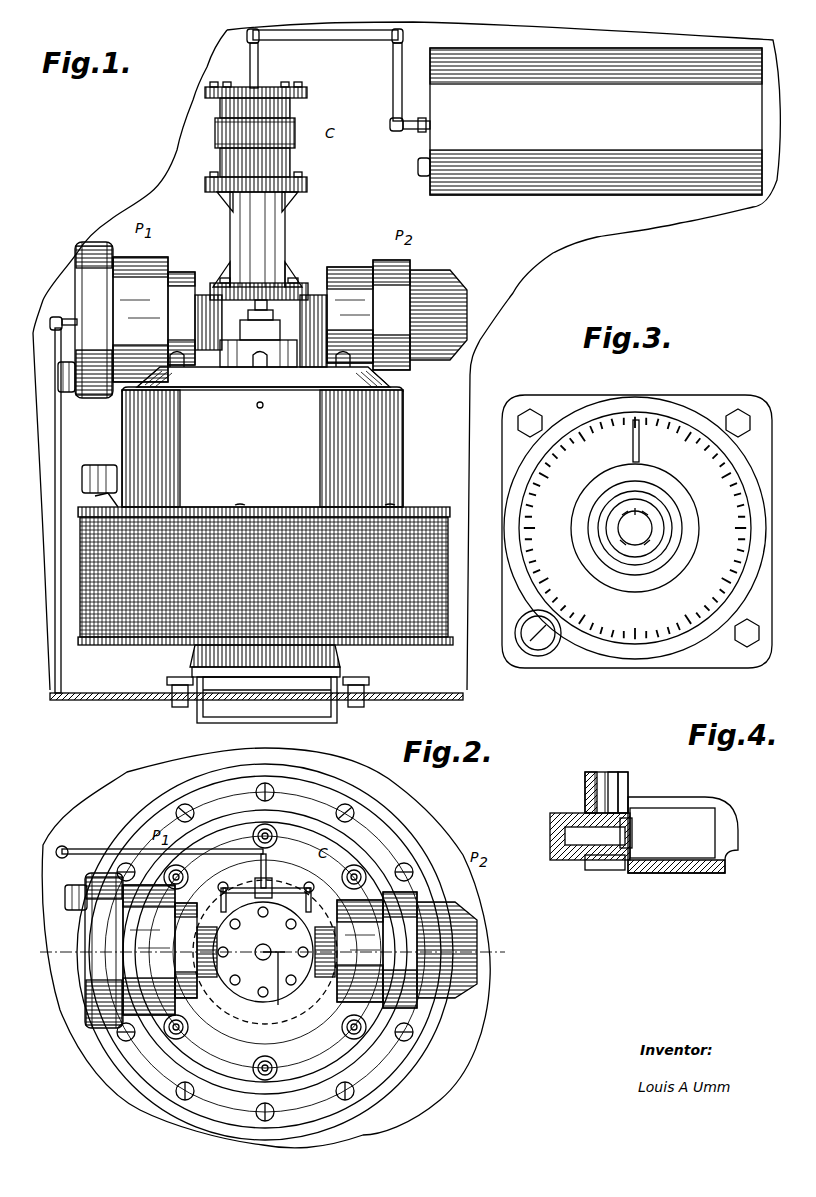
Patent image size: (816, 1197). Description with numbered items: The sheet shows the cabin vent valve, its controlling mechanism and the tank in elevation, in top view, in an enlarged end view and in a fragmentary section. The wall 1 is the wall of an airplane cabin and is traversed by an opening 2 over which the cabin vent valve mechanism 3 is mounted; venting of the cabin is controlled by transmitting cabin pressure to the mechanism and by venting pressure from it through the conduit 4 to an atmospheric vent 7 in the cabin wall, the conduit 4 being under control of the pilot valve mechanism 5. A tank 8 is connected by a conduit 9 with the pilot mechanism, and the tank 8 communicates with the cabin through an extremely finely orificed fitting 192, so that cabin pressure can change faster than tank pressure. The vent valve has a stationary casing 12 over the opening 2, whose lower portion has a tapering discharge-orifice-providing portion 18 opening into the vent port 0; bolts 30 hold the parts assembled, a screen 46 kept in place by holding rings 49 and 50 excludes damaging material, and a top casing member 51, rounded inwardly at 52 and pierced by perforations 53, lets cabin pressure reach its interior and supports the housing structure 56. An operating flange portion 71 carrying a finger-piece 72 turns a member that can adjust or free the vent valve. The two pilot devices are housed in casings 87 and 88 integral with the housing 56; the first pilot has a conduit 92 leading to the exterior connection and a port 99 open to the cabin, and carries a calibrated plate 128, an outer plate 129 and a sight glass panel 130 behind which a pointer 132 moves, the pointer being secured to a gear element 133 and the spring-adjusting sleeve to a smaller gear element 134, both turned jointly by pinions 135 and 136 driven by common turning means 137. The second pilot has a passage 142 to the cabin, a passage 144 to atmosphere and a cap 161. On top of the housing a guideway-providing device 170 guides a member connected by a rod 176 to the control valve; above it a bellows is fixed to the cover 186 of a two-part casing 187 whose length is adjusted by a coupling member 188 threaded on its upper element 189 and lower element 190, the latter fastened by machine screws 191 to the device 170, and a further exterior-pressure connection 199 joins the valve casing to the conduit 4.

In FIG. 1, the wall 1 is at (422, 690).
In FIG. 2, the wall 1 is at (70, 1027).
In FIG. 1, the opening 2 is at (185, 705).
In FIG. 1, the cabin vent valve mechanism 3 is at (412, 467).
In FIG. 2, the cabin vent valve mechanism 3 is at (379, 858).
In FIG. 1, the conduit 4 is at (60, 458).
In FIG. 3, the conduit 4 is at (578, 600).
In FIG. 2, the conduit 4 is at (100, 849).
In FIG. 1, the pilot valve mechanism 5 is at (306, 266).
In FIG. 2, the pilot valve mechanism 5 is at (46, 946).
In FIG. 1, the atmospheric vent 7 is at (60, 702).
In FIG. 1, the tank 8 is at (545, 182).
In FIG. 1, the conduit 9 is at (382, 42).
In FIG. 2, the conduit 9 is at (270, 984).
In FIG. 1, the vent port 0 is at (255, 712).
In FIG. 1, the stationary casing 12 is at (436, 508).
In FIG. 2, the stationary casing 12 is at (165, 1090).
In FIG. 1, the discharge-orifice-providing portion 18 is at (330, 682).
In FIG. 1, the bolts 30 is at (260, 506).
In FIG. 2, the bolts 30 is at (390, 1035).
In FIG. 1, the screen 46 is at (115, 620).
In FIG. 1, the holding ring 49 is at (78, 513).
In FIG. 2, the holding ring 49 is at (440, 1000).
In FIG. 1, the holding ring 50 is at (440, 645).
In FIG. 1, the top casing member 51 is at (405, 420).
In FIG. 2, the top casing member 51 is at (325, 1080).
In FIG. 1, the inwardly rounded portion 52 is at (403, 394).
In FIG. 1, the perforations 53 is at (257, 407).
In FIG. 1, the housing structure 56 is at (385, 379).
In FIG. 2, the housing structure 56 is at (158, 1065).
In FIG. 1, the operating flange portion 71 is at (94, 498).
In FIG. 1, the finger-piece 72 is at (103, 465).
In FIG. 1, the casing 87 is at (160, 275).
In FIG. 4, the casing 87 is at (728, 868).
In FIG. 2, the casing 87 is at (110, 1032).
In FIG. 1, the casing 88 is at (345, 275).
In FIG. 2, the casing 88 is at (398, 990).
In FIG. 2, the conduit 92 is at (220, 902).
In FIG. 2, the port 99 is at (215, 978).
In FIG. 3, the plate 128 is at (580, 402).
In FIG. 4, the plate 128 is at (588, 793).
In FIG. 3, the outer plate 129 is at (675, 675).
In FIG. 3, the sight glass panel 130 is at (668, 442).
In FIG. 4, the sight glass panel 130 is at (590, 778).
In FIG. 3, the pointer 132 is at (640, 428).
In FIG. 4, the gear element 133 is at (614, 775).
In FIG. 4, the gear element 134 is at (625, 784).
In FIG. 4, the pinion 135 is at (590, 862).
In FIG. 4, the pinion 136 is at (630, 800).
In FIG. 1, the common turning means 137 is at (68, 393).
In FIG. 3, the common turning means 137 is at (552, 650).
In FIG. 4, the common turning means 137 is at (572, 812).
In FIG. 2, the common turning means 137 is at (68, 903).
In FIG. 2, the passage 142 is at (318, 978).
In FIG. 2, the passage 144 is at (335, 875).
In FIG. 1, the cap 161 is at (464, 292).
In FIG. 2, the cap 161 is at (470, 915).
In FIG. 1, the guideway-providing device 170 is at (285, 232).
In FIG. 1, the rod 176 is at (253, 306).
In FIG. 1, the cover 186 is at (272, 88).
In FIG. 2, the cover 186 is at (258, 982).
In FIG. 1, the two-part casing 187 is at (215, 105).
In FIG. 1, the coupling member 188 is at (295, 128).
In FIG. 1, the upper element 189 is at (290, 108).
In FIG. 1, the lower element 190 is at (292, 162).
In FIG. 1, the machine screws 191 is at (215, 176).
In FIG. 1, the fitting 192 is at (418, 166).
In FIG. 2, the connection 199 is at (257, 884).